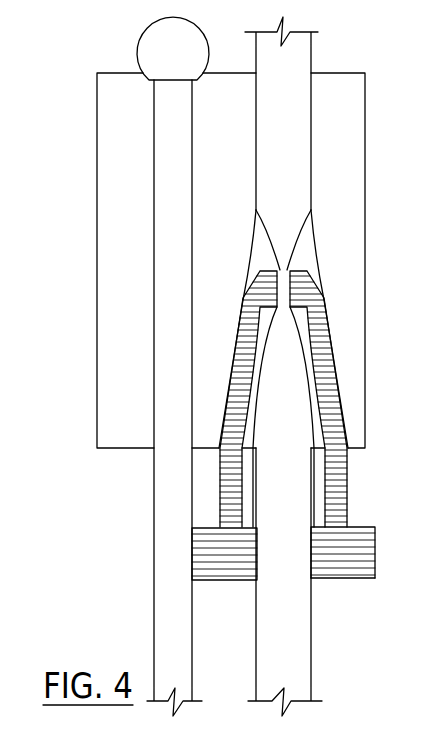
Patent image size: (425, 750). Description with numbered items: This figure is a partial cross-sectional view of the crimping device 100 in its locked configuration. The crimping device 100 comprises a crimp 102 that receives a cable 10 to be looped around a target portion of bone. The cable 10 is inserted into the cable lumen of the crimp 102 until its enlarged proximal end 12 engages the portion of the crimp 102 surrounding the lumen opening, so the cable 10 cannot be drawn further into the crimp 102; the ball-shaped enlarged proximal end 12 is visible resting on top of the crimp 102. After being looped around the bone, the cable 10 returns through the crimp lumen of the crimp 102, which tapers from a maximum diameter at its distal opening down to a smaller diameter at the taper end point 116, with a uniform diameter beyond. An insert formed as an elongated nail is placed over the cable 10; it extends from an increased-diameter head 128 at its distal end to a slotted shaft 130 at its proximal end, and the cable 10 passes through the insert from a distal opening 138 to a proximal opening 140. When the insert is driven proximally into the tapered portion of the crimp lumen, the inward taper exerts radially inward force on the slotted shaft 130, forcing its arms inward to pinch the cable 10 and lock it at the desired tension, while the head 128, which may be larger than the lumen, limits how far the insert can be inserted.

The crimping device 100 is at (66, 279).
The cable 10 is at (162, 186).
The enlarged proximal end 12 is at (167, 47).
The crimp 102 is at (122, 452).
The taper end point 116 is at (313, 227).
The proximal opening 140 is at (288, 274).
The slotted shaft 130 is at (338, 487).
The head 128 is at (357, 552).
The distal opening 138 is at (313, 579).